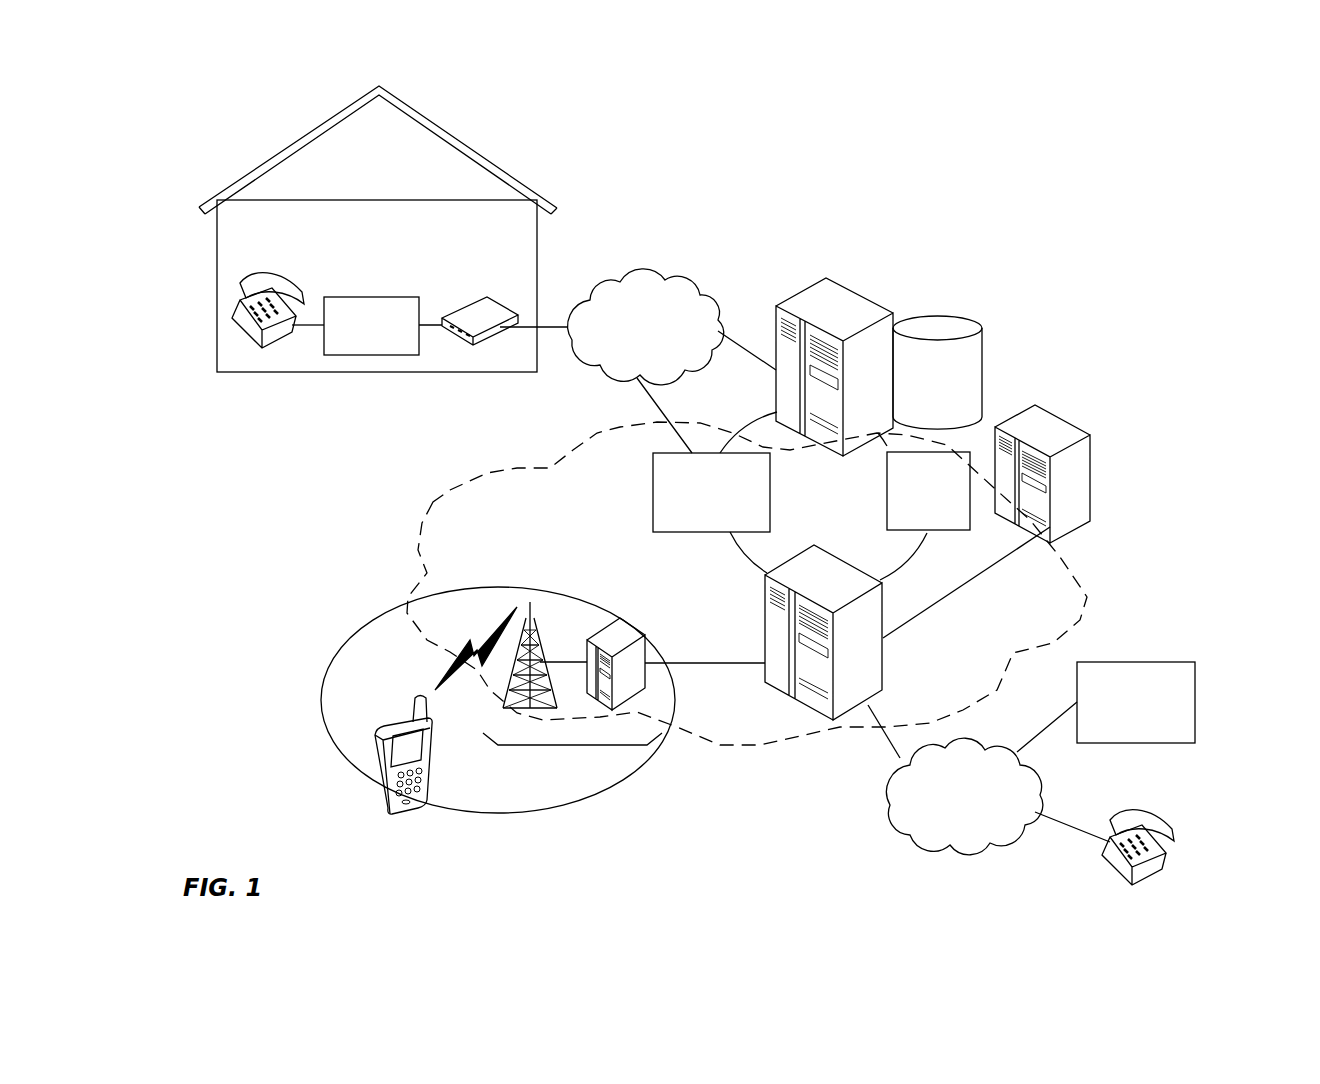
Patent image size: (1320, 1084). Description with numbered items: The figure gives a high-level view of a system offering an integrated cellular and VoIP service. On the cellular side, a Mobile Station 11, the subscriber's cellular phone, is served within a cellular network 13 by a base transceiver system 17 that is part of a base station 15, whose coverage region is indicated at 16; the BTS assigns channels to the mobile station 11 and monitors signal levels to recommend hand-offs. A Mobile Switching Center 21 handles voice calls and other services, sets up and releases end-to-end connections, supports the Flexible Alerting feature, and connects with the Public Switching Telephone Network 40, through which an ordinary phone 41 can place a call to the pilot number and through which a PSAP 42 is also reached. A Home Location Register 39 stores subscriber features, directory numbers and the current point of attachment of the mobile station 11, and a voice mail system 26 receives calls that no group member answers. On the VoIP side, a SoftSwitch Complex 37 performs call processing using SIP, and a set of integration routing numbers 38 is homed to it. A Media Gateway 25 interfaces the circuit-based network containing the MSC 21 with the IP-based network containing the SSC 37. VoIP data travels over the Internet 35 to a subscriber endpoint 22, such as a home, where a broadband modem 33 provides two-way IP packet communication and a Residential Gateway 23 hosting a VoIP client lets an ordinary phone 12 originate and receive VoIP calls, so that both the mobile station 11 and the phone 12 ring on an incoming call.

The mobile station 11 is at (386, 708).
The phone 12 is at (270, 275).
The cellular network 13 is at (430, 502).
The base station 15 is at (587, 780).
The MSC 16 is at (659, 762).
The base transceiver system 17 is at (639, 698).
The Mobile Switching Center 21 is at (827, 540).
The subscriber endpoint 22 is at (292, 139).
The Residential Gateway 23 is at (370, 295).
The Media Gateway 25 is at (649, 517).
The voice mail system 26 is at (954, 537).
The broadband modem 33 is at (478, 352).
The Internet 35 is at (700, 285).
The SoftSwitch Complex 37 is at (889, 301).
The integration routing numbers 38 is at (985, 321).
The Home Location Register 39 is at (1095, 455).
The Public Switching Telephone Network 40 is at (886, 807).
The phone 41 is at (1184, 855).
The public safety answering point (PSAP) 42 is at (1199, 700).